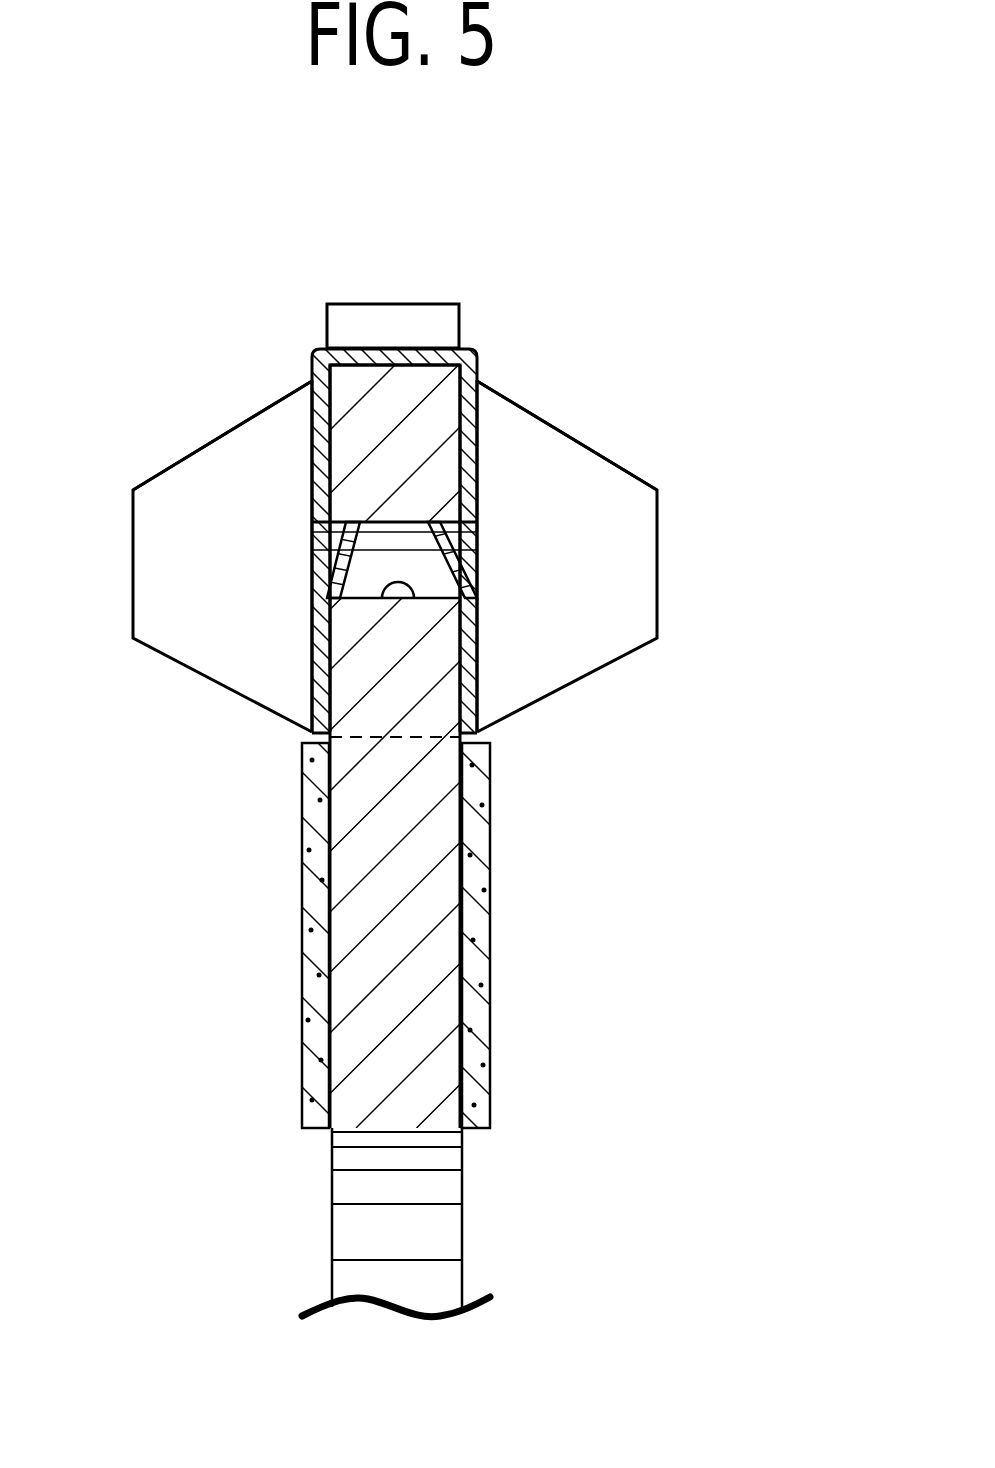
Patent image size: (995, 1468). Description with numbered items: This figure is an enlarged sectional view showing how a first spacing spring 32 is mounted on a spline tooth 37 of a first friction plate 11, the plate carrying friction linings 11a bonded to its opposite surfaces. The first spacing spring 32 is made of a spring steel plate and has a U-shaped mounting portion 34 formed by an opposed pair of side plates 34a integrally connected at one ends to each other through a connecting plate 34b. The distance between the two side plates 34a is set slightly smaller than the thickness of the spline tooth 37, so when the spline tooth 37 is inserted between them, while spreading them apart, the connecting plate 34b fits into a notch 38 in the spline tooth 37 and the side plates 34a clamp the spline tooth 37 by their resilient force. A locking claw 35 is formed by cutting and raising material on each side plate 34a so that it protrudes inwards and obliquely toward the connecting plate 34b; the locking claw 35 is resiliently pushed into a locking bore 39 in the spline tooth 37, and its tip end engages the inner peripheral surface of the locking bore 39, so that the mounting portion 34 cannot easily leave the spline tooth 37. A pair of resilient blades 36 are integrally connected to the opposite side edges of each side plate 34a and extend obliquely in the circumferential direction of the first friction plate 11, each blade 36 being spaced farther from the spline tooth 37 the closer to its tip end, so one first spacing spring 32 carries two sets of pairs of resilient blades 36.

The first friction plate 11 is at (470, 1207).
The friction lining 11a is at (303, 870).
The first spacing spring 32 is at (592, 445).
The mounting portion 34 is at (480, 345).
The side plate 34a is at (328, 432).
The connecting plate 34b is at (350, 348).
The locking claw 35 is at (333, 563).
The resilient blade 36 is at (193, 642).
The spline tooth 37 is at (430, 676).
The notch 38 is at (395, 348).
The locking bore 39 is at (377, 596).